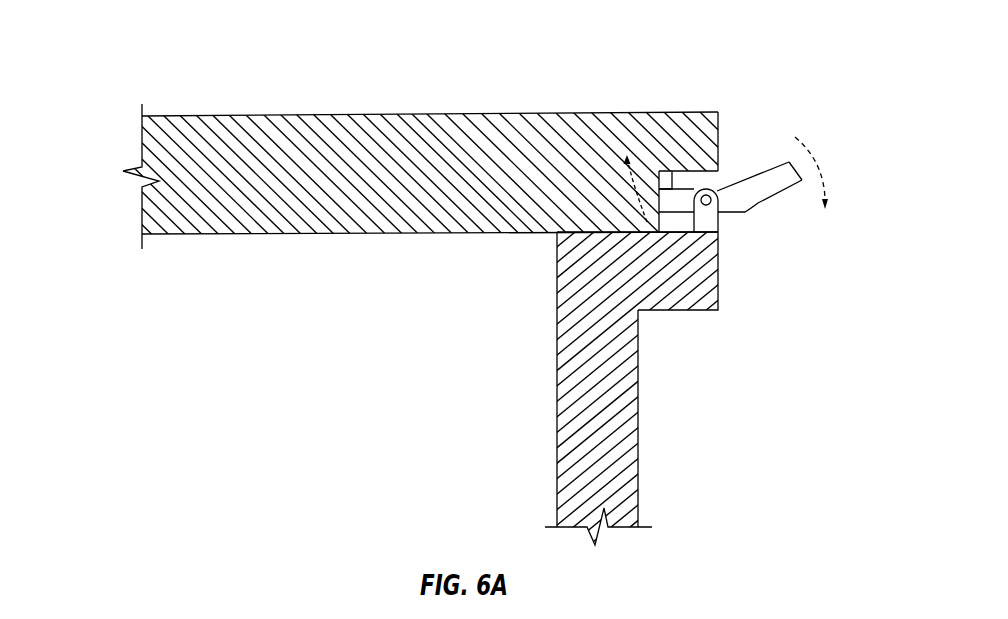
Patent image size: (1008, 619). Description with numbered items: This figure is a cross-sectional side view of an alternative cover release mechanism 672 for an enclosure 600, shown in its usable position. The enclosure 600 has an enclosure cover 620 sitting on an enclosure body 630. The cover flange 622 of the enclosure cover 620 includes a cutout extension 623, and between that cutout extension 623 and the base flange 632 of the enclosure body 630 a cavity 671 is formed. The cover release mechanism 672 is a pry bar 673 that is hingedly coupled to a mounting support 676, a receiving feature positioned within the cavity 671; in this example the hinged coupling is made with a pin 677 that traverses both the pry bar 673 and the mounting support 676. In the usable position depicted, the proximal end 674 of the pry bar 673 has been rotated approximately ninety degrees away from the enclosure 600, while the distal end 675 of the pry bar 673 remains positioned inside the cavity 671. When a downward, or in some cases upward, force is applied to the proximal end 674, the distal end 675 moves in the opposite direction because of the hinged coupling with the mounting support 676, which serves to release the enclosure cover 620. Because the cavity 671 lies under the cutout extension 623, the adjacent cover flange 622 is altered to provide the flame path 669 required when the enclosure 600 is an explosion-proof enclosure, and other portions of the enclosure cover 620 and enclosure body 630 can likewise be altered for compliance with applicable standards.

The enclosure 600 is at (165, 63).
The enclosure cover 620 is at (434, 186).
The cover flange 622 is at (575, 147).
The cutout extension 623 is at (697, 145).
The cavity 671 is at (684, 179).
The distal end 675 is at (672, 188).
The pin 677 is at (741, 187).
The cover release mechanism 672 is at (779, 151).
The proximal end 674 is at (790, 177).
The pry bar 673 is at (753, 209).
The mounting support 676 is at (721, 225).
The flame path 669 is at (583, 233).
The enclosure body 630 is at (618, 403).
The base flange 632 is at (700, 270).